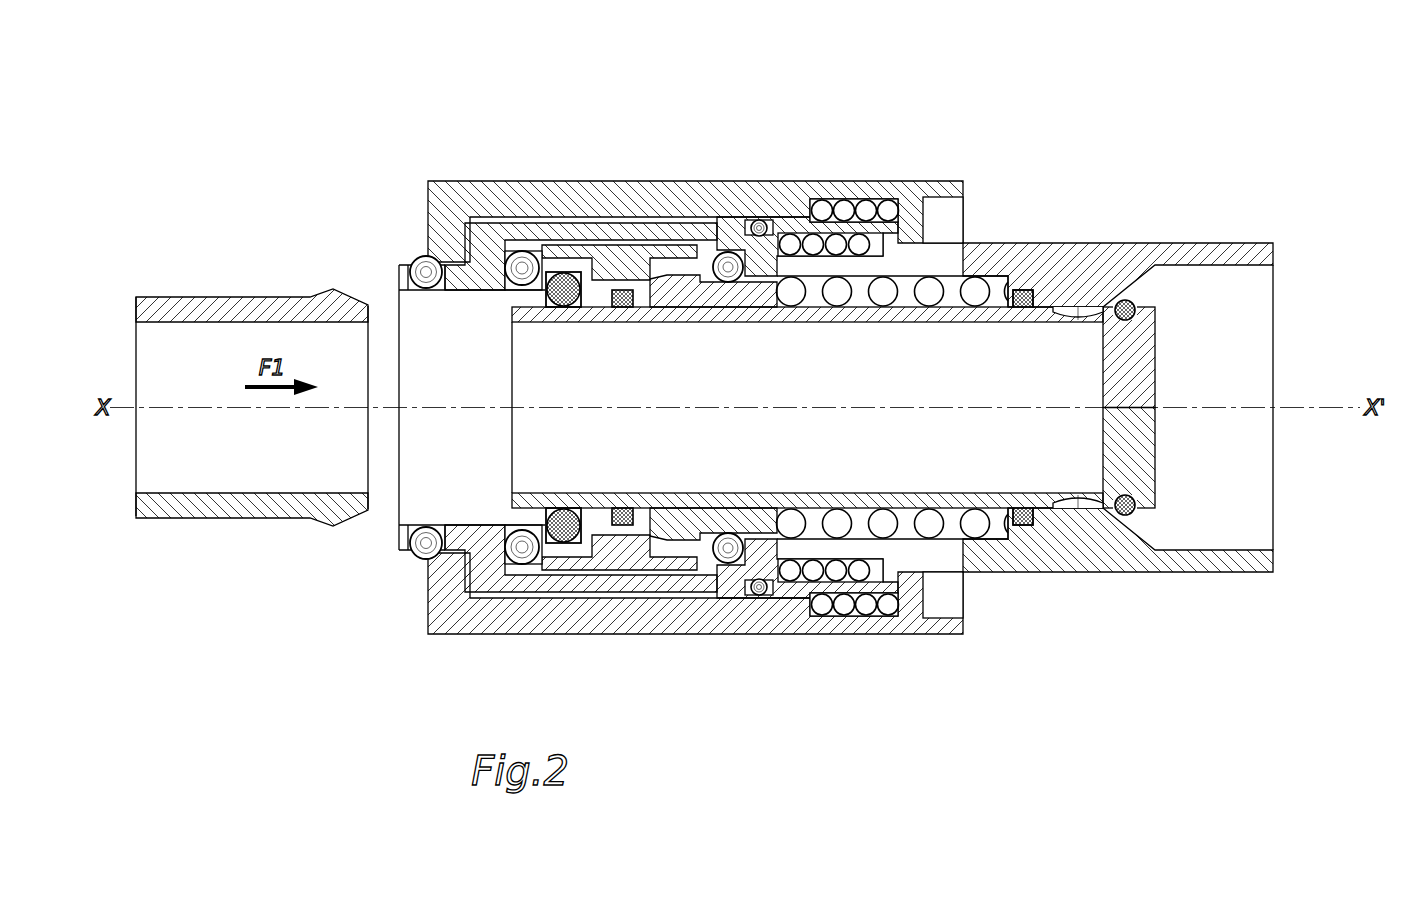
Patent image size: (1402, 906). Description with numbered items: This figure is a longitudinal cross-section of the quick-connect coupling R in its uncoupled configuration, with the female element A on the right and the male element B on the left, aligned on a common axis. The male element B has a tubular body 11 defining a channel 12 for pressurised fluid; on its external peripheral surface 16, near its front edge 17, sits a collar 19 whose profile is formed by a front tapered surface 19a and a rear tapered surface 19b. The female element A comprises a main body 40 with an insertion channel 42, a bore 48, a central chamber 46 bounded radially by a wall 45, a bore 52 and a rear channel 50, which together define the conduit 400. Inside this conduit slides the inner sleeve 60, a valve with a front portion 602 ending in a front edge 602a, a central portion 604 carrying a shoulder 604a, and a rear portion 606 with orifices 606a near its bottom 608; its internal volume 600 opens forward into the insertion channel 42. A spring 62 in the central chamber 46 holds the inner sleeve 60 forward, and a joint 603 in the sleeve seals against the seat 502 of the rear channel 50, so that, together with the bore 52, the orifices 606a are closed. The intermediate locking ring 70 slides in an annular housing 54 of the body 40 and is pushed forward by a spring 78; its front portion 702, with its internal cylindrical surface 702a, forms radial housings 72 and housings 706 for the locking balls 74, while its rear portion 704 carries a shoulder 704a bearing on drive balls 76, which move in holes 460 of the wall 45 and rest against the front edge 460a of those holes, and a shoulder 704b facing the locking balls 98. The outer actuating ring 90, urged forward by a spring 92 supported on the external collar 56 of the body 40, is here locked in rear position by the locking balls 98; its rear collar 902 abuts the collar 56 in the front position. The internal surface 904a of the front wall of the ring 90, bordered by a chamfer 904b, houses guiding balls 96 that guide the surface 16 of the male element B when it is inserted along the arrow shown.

The tubular body 11 is at (206, 308).
The channel 12 is at (208, 480).
The external peripheral surface 16 is at (273, 518).
The front edge 17 is at (369, 507).
The collar 19 is at (333, 236).
The front tapered surface 19a is at (352, 289).
The rear tapered surface 19b is at (311, 289).
The main body 40 is at (1058, 558).
The insertion channel 42 is at (491, 494).
The wall 45 is at (828, 250).
The central chamber 46 is at (818, 500).
The bore 48 is at (613, 495).
The rear channel 50 is at (1060, 490).
The bore 52 is at (1032, 496).
The annular housing 54 is at (845, 592).
The external collar 56 is at (908, 610).
The inner sleeve 60 is at (1161, 389).
The spring 62 is at (975, 292).
The intermediate locking ring 70 is at (705, 248).
The radial housings 72 is at (528, 533).
The locking balls 74 is at (510, 262).
The drive balls 76 is at (745, 240).
The spring 78 is at (862, 212).
The outer actuating ring 90 is at (636, 190).
The spring 92 is at (880, 605).
The guiding balls 96 is at (424, 270).
The locking balls 98 is at (766, 222).
The conduit 400 is at (800, 437).
The holes 460 is at (785, 240).
The front edge 460a is at (760, 548).
The seat 502 is at (1152, 282).
The internal volume 600 is at (807, 407).
The front portion 602 is at (575, 545).
The front edge 602a is at (509, 318).
The joint 603 is at (1134, 297).
The central portion 604 is at (682, 518).
The shoulder 604a is at (678, 269).
The rear portion 606 is at (972, 500).
The orifices 606a is at (1093, 307).
The bottom 608 is at (1140, 437).
The front portion 702 is at (482, 238).
The internal cylindrical surface 702a is at (485, 515).
The rear portion 704 is at (757, 555).
The shoulder 704a is at (736, 271).
The shoulder 704b is at (730, 562).
The housings 706 is at (529, 261).
The rear collar 902 is at (960, 212).
The internal surface 904a is at (455, 276).
The chamfer 904b is at (430, 540).
The female element A is at (1099, 230).
The male element B is at (160, 287).
The quick-connect coupling R is at (692, 98).